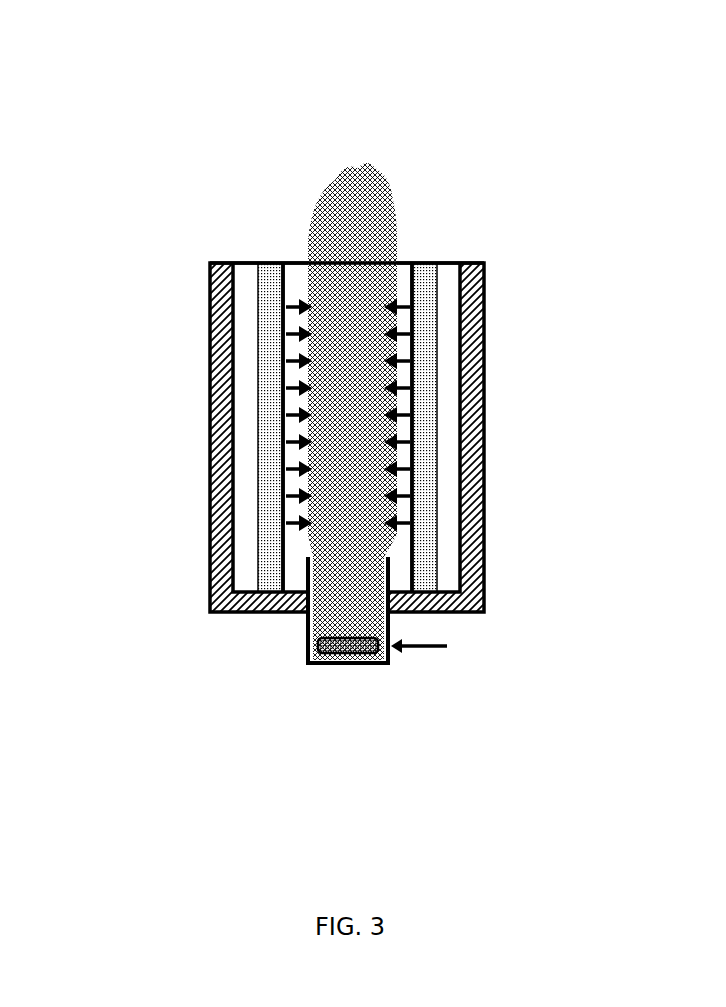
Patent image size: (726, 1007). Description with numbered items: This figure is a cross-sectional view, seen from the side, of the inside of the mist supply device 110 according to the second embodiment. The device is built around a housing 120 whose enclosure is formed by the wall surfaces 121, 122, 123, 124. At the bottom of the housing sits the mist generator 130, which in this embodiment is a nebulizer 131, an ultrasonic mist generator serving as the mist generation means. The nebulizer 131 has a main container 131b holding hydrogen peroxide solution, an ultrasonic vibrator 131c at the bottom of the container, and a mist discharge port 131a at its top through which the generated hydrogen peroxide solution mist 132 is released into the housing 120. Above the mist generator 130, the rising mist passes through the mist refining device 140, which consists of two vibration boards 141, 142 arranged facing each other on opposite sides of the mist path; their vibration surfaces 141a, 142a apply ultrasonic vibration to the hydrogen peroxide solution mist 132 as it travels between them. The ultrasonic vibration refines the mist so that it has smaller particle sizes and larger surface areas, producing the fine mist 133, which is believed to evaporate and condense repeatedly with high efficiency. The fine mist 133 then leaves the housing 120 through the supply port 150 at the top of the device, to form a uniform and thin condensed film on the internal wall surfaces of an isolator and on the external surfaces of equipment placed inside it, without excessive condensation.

The mist supply device 110 is at (265, 111).
The housing 120 is at (487, 458).
The wall surface 121 is at (237, 613).
The wall surface 122 is at (487, 555).
The wall surface 123 is at (209, 464).
The wall surface 124 is at (447, 262).
The mist generator 130 is at (330, 690).
The nebulizer 131 is at (308, 662).
The mist discharge port 131a is at (388, 553).
The main container 131b is at (306, 633).
The ultrasonic vibrator 131c is at (370, 665).
The hydrogen peroxide solution mist 132 is at (318, 540).
The fine mist 133 is at (347, 432).
The mist refining device 140 is at (414, 191).
The vibration board 141 is at (430, 382).
The vibration surface 141a is at (403, 300).
The vibration board 142 is at (270, 357).
The vibration surface 142a is at (298, 292).
The supply port 150 is at (302, 246).